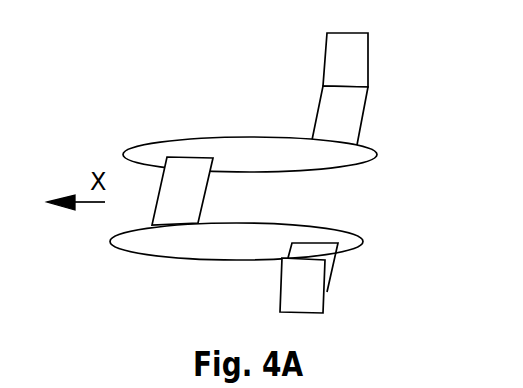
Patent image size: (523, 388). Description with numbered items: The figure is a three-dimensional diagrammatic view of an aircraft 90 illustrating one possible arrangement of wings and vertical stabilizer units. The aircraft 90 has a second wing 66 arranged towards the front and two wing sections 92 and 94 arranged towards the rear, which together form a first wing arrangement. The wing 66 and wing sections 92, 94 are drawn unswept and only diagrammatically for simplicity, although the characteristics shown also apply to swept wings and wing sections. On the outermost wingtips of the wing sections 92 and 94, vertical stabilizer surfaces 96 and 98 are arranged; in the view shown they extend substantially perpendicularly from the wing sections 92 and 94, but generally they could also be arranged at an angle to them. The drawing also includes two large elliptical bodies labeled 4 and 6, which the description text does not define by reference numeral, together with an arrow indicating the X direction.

The lower disc 4 is at (225, 248).
The upper disc 6 is at (258, 148).
The second wing 66 is at (198, 189).
The aircraft 90 is at (394, 180).
The wing section 92 is at (330, 258).
The wing section 94 is at (342, 120).
The vertical stabilizer surface 96 is at (300, 291).
The vertical stabilizer surface 98 is at (347, 63).